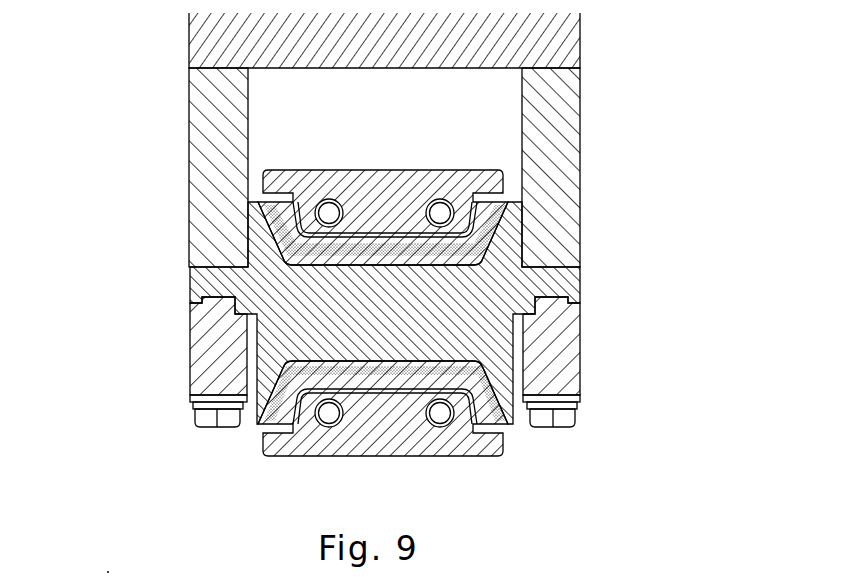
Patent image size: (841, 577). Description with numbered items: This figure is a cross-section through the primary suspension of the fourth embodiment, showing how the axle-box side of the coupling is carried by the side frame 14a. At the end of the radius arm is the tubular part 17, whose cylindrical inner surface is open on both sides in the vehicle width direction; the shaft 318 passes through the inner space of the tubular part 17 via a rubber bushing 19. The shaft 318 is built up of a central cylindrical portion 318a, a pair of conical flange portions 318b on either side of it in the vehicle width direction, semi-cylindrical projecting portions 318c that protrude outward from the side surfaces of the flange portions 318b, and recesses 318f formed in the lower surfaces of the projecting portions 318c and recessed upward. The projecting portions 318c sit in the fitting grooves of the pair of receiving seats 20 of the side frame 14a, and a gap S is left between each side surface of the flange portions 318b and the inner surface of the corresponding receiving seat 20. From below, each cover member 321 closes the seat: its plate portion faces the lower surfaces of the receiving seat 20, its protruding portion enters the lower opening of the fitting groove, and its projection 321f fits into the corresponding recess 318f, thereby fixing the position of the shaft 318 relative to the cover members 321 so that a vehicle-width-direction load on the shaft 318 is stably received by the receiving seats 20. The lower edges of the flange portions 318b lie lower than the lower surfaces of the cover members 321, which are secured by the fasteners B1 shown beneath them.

The side frame 14a is at (580, 40).
The receiving seat 20 is at (189, 112).
The tubular part 17 is at (308, 169).
The rubber bushing 19 is at (365, 246).
The shaft 318 is at (408, 284).
The cylindrical portion 318a is at (388, 346).
The conical flange portion 318b is at (253, 410).
The projecting portion 318c is at (190, 277).
The recess 318f is at (207, 288).
The cover member 321 is at (187, 379).
The projection 321f is at (212, 306).
The gap S is at (253, 344).
The bolt B1 is at (204, 428).